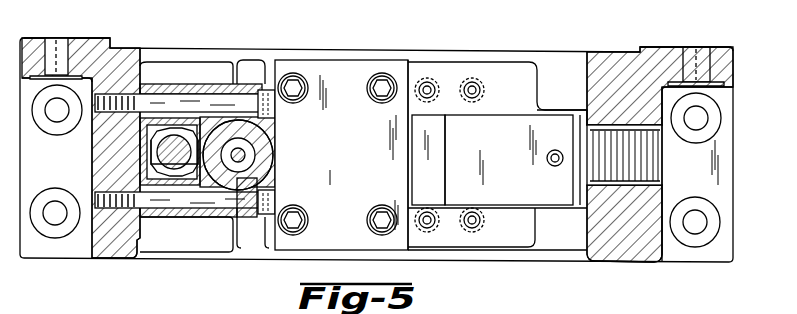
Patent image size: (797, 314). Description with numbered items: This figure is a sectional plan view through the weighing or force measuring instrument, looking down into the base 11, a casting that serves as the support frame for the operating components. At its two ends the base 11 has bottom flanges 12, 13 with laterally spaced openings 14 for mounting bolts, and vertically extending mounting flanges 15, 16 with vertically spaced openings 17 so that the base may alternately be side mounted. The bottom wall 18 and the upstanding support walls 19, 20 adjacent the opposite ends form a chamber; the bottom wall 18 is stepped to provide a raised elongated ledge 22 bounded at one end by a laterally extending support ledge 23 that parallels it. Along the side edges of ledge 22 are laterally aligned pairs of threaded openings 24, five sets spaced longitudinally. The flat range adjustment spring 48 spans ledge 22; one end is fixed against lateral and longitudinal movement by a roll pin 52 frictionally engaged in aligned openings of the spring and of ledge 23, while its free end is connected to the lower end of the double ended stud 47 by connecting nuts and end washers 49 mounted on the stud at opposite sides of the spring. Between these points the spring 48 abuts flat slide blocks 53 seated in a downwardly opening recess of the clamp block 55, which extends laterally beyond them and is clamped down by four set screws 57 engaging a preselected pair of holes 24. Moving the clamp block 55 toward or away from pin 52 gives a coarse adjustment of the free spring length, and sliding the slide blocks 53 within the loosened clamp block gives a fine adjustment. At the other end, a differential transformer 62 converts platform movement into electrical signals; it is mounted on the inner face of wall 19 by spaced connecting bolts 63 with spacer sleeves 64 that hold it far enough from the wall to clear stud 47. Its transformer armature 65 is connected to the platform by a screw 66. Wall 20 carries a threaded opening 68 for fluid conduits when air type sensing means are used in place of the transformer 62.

The base 11 is at (566, 270).
The bottom flange 12 is at (46, 258).
The bottom flange 13 is at (733, 165).
The openings 14 is at (54, 208).
The mounting flange 15 is at (28, 38).
The mounting flange 16 is at (730, 47).
The openings 17 is at (68, 38).
The bottom wall 18 is at (510, 259).
The support wall 19 is at (116, 248).
The support wall 20 is at (635, 258).
The ledge 22 is at (515, 62).
The support ledge 23 is at (562, 110).
The threaded openings 24 is at (430, 88).
The double ended stud 47 is at (174, 140).
The range adjustment spring 48 is at (512, 141).
The connecting nut and end washer 49 is at (185, 177).
The roll pin 52 is at (549, 160).
The slide block 53 is at (440, 140).
The clamp block 55 is at (355, 144).
The set screws 57 is at (382, 80).
The differential transformer 62 is at (232, 123).
The connecting bolts 63 is at (276, 104).
The spacer sleeves 64 is at (202, 85).
The transformer armature 65 is at (249, 220).
The screw 66 is at (246, 156).
The threaded opening 68 is at (650, 185).